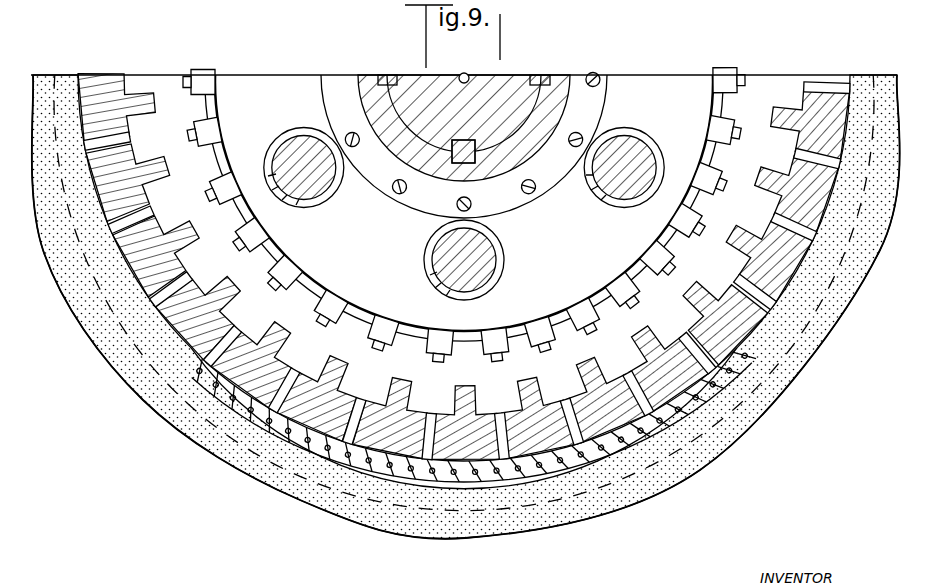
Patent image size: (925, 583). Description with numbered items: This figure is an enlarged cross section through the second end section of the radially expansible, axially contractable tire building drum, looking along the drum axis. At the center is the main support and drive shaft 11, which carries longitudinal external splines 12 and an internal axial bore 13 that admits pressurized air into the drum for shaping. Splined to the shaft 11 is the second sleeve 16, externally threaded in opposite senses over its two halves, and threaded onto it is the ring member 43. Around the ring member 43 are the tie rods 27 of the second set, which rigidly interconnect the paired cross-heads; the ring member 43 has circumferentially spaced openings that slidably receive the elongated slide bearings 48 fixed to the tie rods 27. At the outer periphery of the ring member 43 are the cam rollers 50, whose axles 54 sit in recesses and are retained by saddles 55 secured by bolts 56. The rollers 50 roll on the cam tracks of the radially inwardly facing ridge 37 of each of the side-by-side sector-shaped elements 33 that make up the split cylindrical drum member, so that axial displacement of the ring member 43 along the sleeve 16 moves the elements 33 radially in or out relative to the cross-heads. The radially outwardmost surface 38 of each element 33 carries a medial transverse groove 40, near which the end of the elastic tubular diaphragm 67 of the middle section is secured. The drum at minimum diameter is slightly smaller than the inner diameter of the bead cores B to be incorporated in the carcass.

The main support and drive shaft 11 is at (408, 84).
The longitudinal external splines 12 is at (388, 76).
The internal axial bore 13 is at (465, 73).
The second sleeve 16 is at (556, 85).
The tie rods 27 is at (298, 138).
The sector-shaped elements 33 is at (684, 352).
The ridge 37 is at (283, 346).
The radially outwardmost surface 38 is at (456, 525).
The transverse groove 40 is at (162, 431).
The ring member 43 is at (660, 88).
The elongated slide bearings 48 is at (312, 200).
The cam rollers 50 is at (242, 6).
The axles 54 is at (171, 13).
The saddles 55 is at (680, 228).
The bolts 56 is at (194, 138).
The tubular diaphragm 67 is at (353, 522).
The bead cores B is at (549, 482).